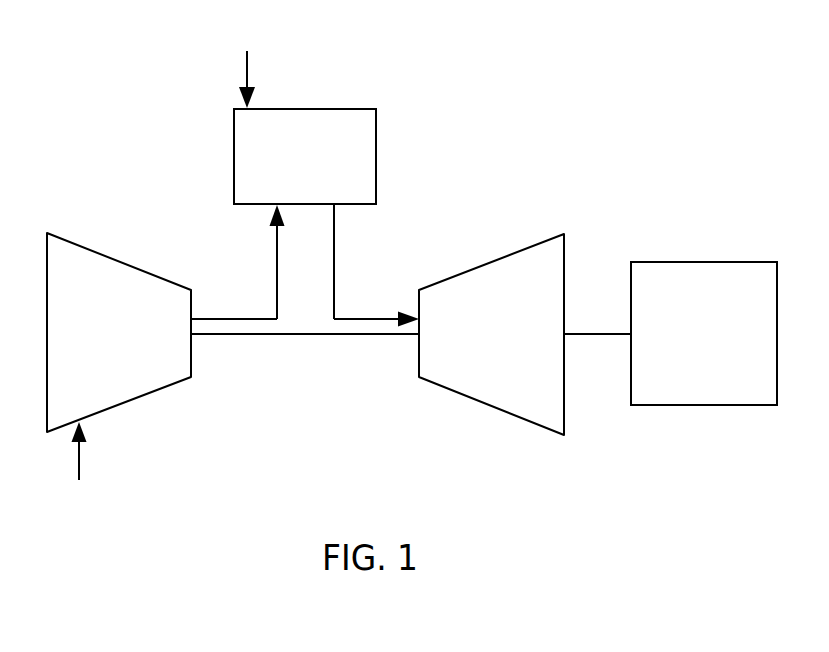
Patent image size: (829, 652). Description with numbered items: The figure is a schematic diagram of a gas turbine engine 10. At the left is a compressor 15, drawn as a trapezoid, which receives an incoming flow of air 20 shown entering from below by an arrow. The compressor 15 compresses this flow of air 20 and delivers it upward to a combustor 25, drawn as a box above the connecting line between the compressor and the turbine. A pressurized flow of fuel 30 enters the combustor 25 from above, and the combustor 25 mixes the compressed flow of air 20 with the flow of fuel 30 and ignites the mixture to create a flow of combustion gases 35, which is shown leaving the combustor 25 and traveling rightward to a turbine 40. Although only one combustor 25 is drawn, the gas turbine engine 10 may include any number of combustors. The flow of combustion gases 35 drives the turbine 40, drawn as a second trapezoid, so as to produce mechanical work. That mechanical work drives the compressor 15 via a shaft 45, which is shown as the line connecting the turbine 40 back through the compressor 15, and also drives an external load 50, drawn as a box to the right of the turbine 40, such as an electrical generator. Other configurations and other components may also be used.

The gas turbine engine 10 is at (408, 272).
The compressor 15 is at (105, 342).
The flow of air 20 is at (80, 460).
The combustor 25 is at (292, 169).
The flow of fuel 30 is at (247, 72).
The flow of combustion gases 35 is at (365, 318).
The turbine 40 is at (483, 342).
The shaft 45 is at (593, 332).
The external load 50 is at (690, 346).